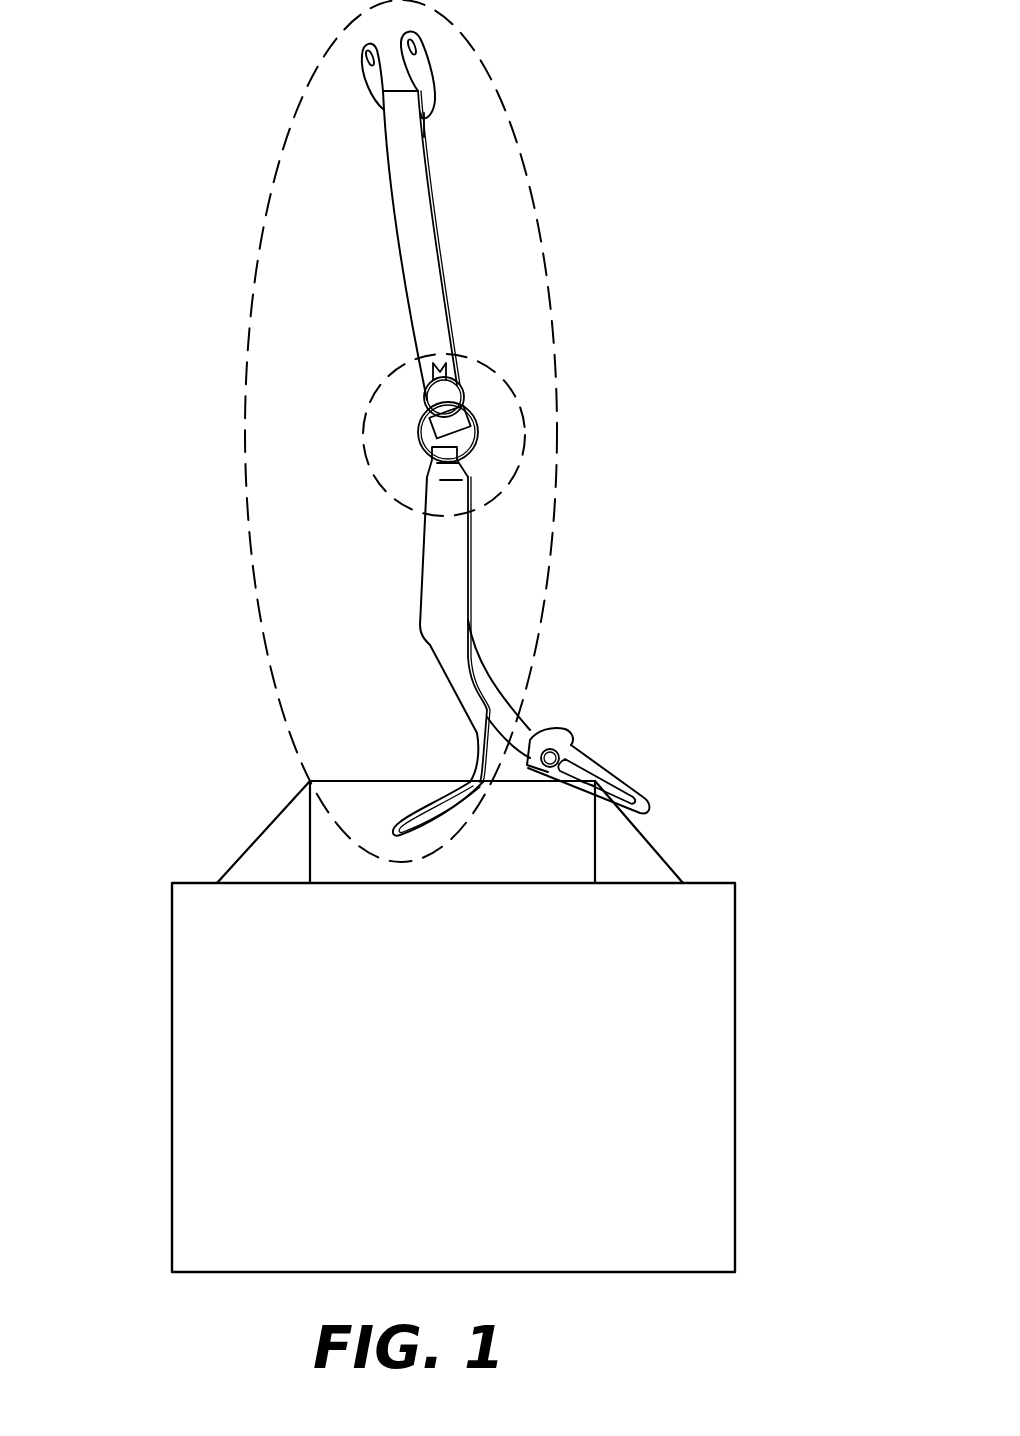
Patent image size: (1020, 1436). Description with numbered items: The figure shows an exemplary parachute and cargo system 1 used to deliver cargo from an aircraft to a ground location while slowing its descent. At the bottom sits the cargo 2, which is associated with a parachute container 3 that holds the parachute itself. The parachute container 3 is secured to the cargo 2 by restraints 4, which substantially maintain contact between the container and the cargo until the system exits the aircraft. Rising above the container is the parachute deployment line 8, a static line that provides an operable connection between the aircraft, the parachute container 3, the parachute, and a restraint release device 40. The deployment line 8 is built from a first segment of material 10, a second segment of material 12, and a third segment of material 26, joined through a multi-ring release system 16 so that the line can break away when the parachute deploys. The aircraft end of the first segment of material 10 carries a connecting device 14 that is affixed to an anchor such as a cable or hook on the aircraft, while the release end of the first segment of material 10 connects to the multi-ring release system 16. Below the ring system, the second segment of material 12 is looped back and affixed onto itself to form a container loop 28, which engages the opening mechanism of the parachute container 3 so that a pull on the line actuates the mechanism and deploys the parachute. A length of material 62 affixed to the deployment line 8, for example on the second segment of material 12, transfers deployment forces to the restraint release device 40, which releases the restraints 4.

The parachute and cargo system 1 is at (83, 524).
The cargo 2 is at (479, 1069).
The parachute container 3 is at (542, 861).
The restraints 4 is at (667, 860).
The parachute deployment line 8 is at (545, 263).
The first segment of material 10 is at (385, 178).
The second segment of material 12 is at (420, 615).
The connecting device 14 is at (425, 65).
The multi-ring release system 16 is at (517, 397).
The third segment of material 26 is at (468, 580).
The container loop 28 is at (417, 798).
The restraint release device 40 is at (618, 768).
The length of material 62 is at (520, 733).